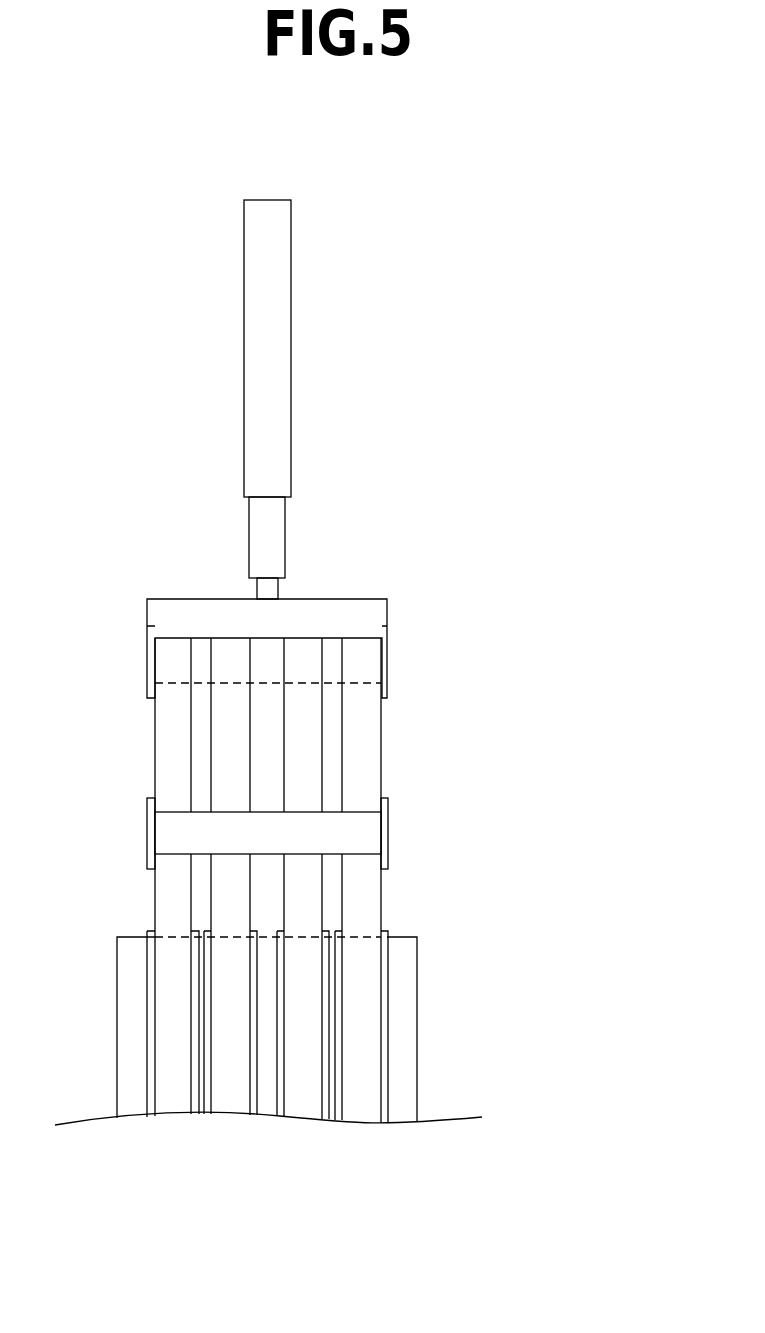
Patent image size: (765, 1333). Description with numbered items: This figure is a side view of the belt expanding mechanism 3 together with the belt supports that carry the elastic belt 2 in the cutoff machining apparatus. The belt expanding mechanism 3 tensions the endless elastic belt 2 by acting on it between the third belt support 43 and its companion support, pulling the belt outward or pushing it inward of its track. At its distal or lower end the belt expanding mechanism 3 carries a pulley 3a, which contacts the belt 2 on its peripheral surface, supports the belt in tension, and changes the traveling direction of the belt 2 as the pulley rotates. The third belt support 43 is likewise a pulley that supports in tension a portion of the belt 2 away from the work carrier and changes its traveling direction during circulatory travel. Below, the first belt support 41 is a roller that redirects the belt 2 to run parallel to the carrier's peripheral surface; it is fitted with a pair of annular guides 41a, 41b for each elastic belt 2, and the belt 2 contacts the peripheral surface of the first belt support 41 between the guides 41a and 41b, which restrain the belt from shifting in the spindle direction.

The belt expanding mechanism 3 is at (265, 388).
The pulley 3a is at (388, 656).
The elastic belt 2 is at (363, 923).
The third belt support 43 is at (388, 830).
The first belt support 41 is at (402, 1075).
The annular guide 41a is at (383, 1124).
The annular guide 41b is at (337, 1124).